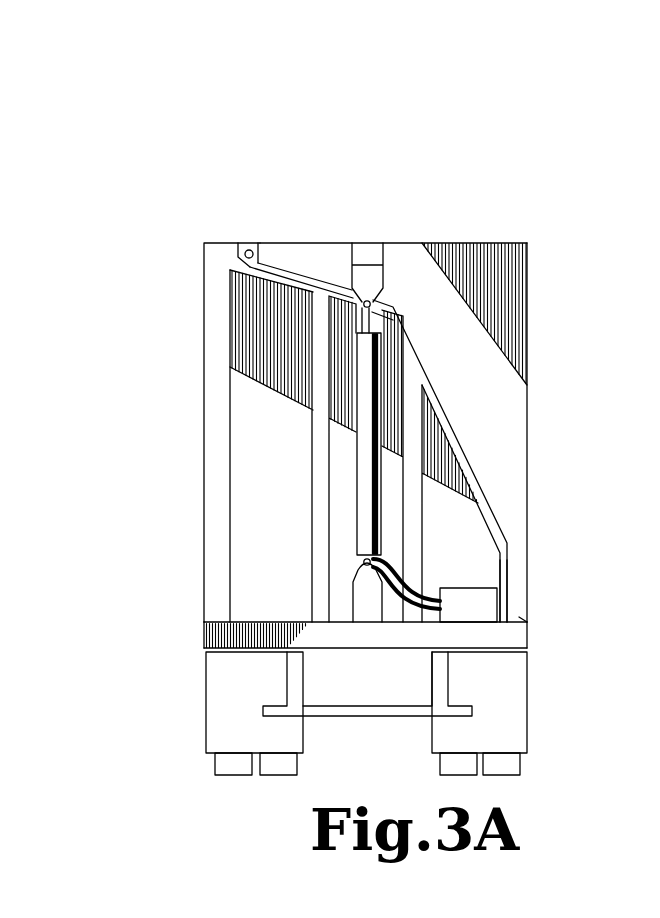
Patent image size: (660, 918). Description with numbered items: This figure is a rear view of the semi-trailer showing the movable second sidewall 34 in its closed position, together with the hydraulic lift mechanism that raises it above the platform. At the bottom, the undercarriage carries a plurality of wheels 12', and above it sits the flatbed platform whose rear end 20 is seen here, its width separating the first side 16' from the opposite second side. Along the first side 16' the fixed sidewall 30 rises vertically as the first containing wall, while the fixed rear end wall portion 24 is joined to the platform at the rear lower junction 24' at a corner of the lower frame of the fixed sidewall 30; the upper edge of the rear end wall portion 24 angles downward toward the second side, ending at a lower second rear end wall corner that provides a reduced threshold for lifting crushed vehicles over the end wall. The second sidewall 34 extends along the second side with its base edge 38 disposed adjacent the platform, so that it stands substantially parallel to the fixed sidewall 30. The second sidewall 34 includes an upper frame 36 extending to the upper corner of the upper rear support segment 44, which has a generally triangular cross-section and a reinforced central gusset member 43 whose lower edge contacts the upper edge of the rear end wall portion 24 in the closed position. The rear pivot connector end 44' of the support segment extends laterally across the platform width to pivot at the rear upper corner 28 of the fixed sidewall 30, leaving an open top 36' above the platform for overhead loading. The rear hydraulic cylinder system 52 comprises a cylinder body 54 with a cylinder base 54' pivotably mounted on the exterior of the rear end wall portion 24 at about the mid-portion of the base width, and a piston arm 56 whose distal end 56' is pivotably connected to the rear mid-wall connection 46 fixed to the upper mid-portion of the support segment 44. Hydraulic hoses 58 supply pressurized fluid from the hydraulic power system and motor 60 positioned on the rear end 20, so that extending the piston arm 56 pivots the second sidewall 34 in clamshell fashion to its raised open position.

The wheels 12' is at (357, 797).
The first side 16' is at (150, 635).
The rear end 20 is at (514, 635).
The rear end wall portion 24 is at (271, 446).
The rear lower junction 24' is at (228, 621).
The rear upper corner 28 is at (233, 255).
The fixed sidewall 30 is at (216, 425).
The second sidewall 34 is at (530, 427).
The upper frame 36 is at (409, 289).
The open top 36' is at (479, 197).
The base edge 38 is at (520, 622).
The reinforced central gusset member 43 is at (500, 397).
The upper rear support segment 44 is at (492, 439).
The rear pivot connector end 44' is at (301, 243).
The rear mid-wall connection 46 is at (367, 253).
The rear hydraulic cylinder system 52 is at (348, 447).
The cylinder body 54 is at (472, 444).
The cylinder base 54' is at (320, 575).
The piston arm 56 is at (406, 319).
The distal end 56' is at (399, 292).
The hydraulic hoses 58 is at (392, 600).
The hydraulic power system and motor 60 is at (481, 616).